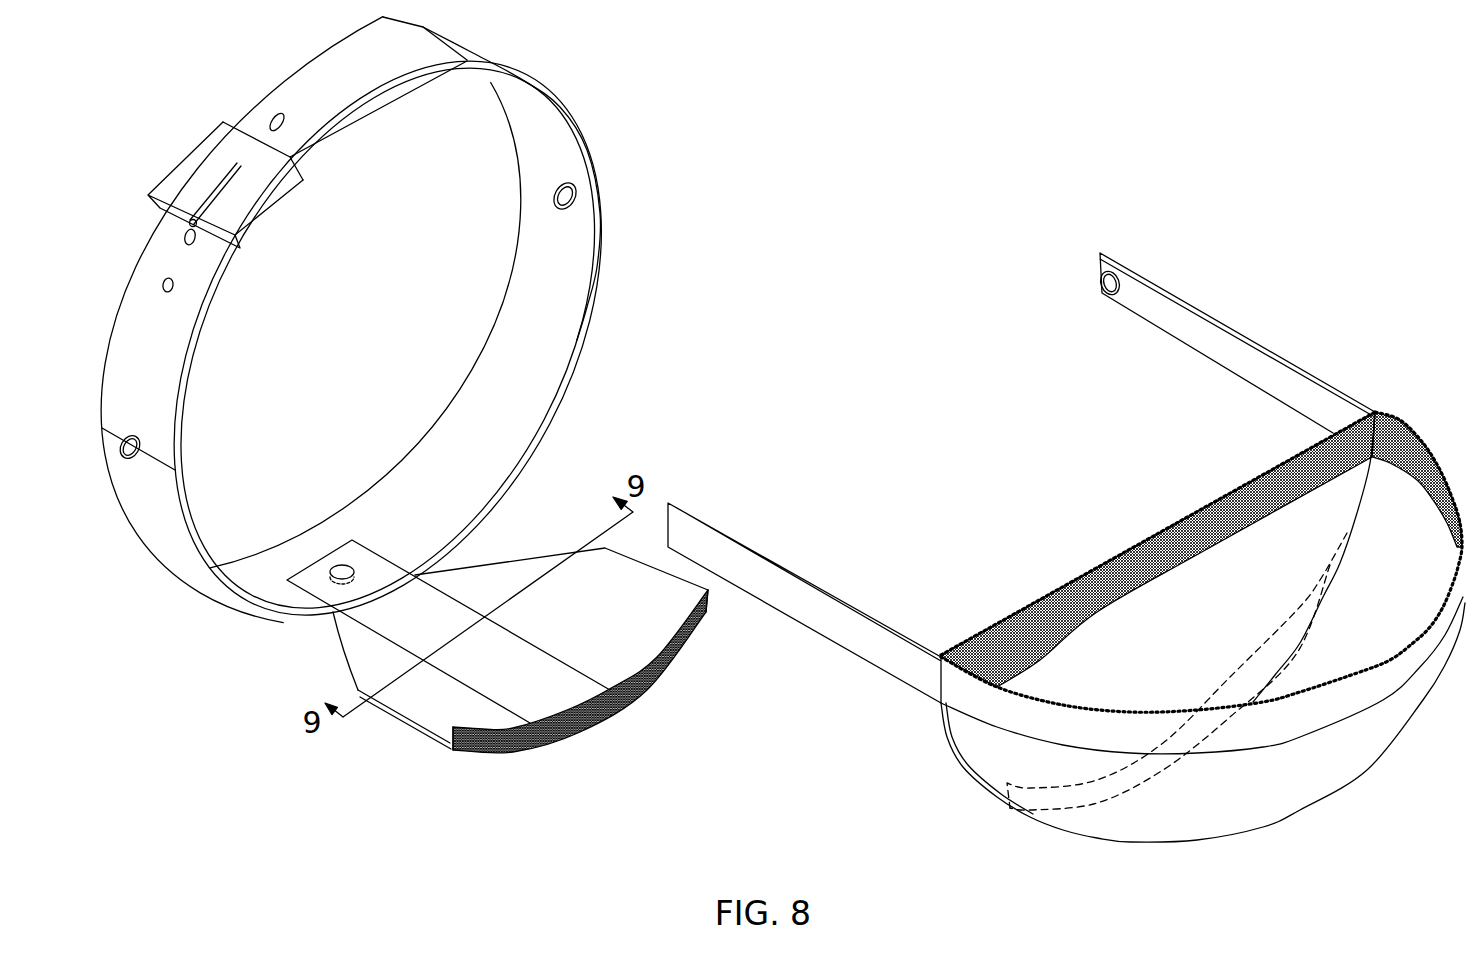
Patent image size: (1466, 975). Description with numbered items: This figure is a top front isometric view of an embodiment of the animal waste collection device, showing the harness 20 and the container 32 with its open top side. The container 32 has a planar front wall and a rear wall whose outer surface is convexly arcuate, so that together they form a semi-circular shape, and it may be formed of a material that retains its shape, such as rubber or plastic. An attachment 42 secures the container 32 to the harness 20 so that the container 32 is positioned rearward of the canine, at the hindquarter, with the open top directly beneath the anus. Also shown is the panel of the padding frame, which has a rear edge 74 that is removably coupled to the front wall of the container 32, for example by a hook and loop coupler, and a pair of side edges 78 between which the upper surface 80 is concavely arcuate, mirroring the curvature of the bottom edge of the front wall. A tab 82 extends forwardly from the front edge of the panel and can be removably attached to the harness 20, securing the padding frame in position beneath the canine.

The harness 20 is at (588, 107).
The container 32 is at (1047, 830).
The attachment 42 is at (1222, 301).
The rear edge 74 is at (513, 737).
The side edges 78 is at (453, 740).
The upper surface 80 is at (707, 593).
The tab 82 is at (340, 613).